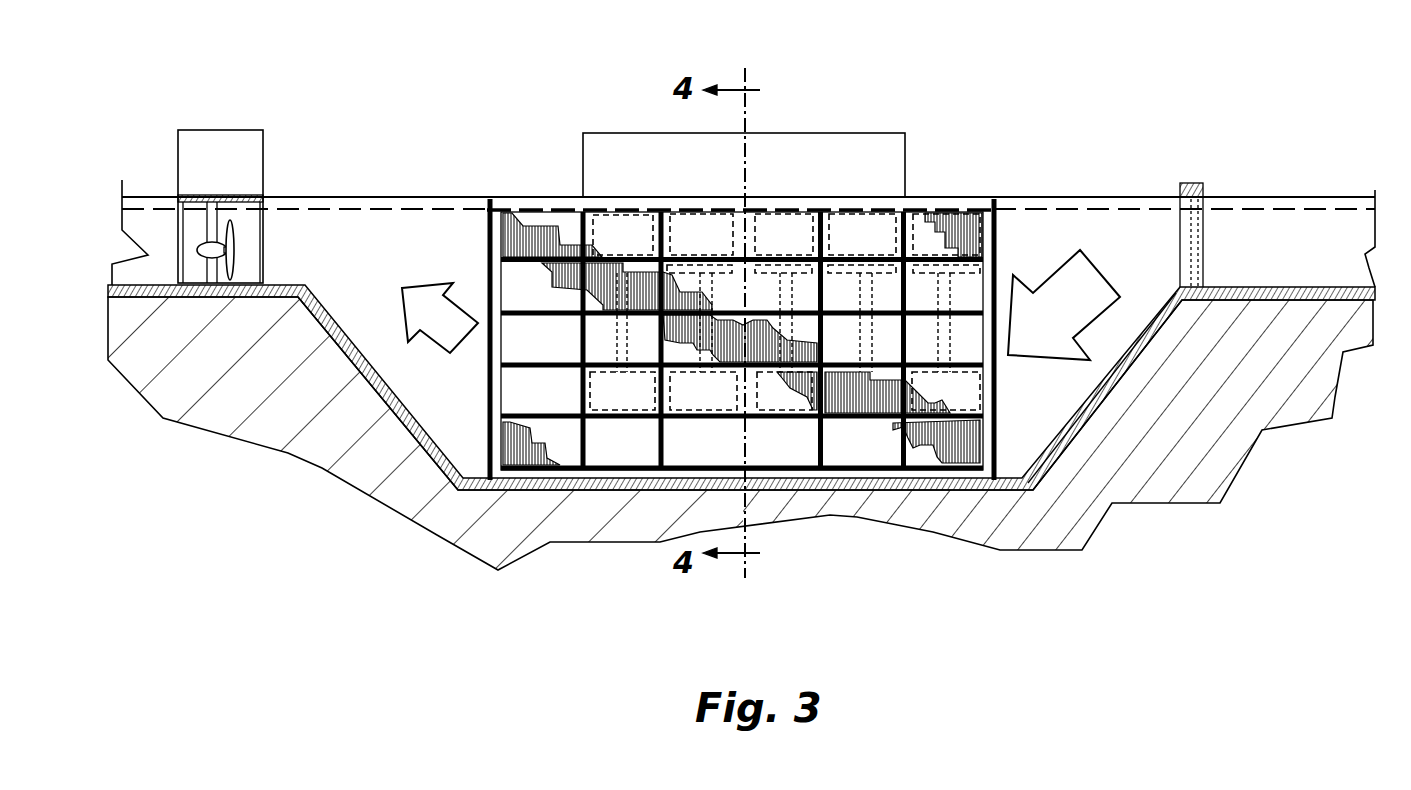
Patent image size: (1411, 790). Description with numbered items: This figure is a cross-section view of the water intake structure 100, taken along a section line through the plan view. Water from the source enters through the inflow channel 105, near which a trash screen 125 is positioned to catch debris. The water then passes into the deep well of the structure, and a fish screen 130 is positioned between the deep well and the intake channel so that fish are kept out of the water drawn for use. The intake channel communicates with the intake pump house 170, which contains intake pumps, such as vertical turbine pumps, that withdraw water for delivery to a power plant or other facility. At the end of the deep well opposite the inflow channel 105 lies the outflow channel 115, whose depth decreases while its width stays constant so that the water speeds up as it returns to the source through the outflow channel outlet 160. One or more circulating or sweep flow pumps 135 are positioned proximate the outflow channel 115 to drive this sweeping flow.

The water intake structure 100 is at (980, 158).
The inflow channel 105 is at (1133, 250).
The outflow channel 115 is at (383, 250).
The trash screen 125 is at (1198, 235).
The fish screen 130 is at (524, 224).
The circulating or sweep flow pump 135 is at (233, 231).
The outflow channel outlet 160 is at (161, 231).
The intake pump house 170 is at (795, 133).